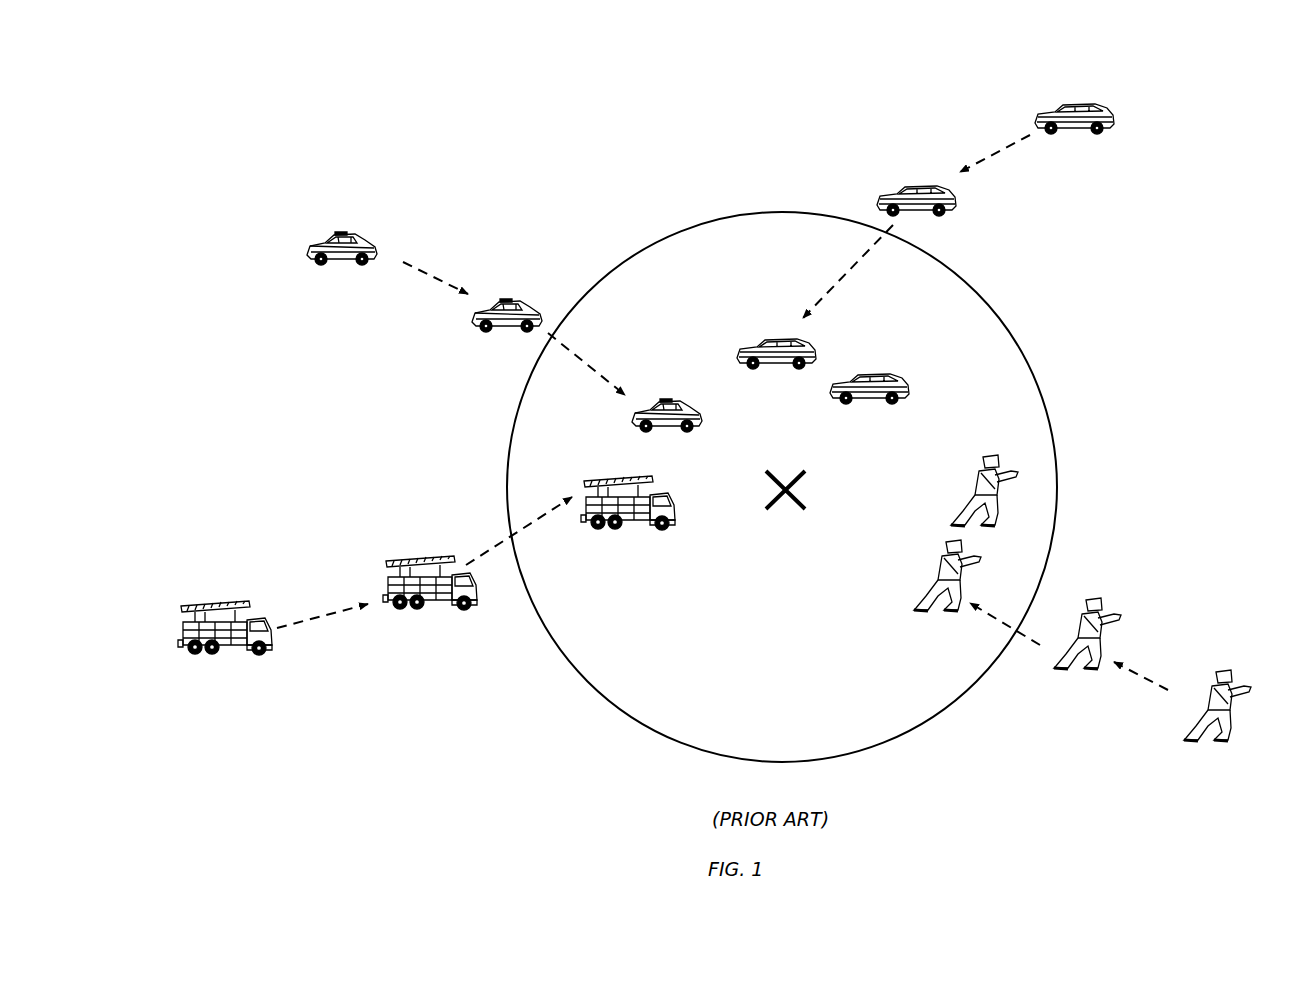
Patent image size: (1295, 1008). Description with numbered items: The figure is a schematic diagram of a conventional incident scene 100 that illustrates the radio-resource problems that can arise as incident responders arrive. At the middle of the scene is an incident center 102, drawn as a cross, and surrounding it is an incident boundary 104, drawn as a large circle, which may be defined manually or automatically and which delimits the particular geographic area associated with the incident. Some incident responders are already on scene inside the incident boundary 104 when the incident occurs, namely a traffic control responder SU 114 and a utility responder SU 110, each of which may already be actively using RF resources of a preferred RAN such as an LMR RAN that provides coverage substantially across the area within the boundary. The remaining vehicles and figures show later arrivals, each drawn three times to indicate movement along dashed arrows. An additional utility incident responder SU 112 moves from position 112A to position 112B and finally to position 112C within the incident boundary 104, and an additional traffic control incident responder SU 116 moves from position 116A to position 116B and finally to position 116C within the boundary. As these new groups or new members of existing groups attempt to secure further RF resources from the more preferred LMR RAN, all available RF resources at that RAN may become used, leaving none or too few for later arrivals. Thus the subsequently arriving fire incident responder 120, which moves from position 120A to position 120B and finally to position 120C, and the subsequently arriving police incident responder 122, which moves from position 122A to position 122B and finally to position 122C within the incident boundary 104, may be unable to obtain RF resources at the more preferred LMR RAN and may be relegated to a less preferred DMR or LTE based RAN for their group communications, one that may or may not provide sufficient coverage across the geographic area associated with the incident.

The conventional incident scene 100 is at (1272, 264).
The incident center 102 is at (799, 494).
The incident boundary 104 is at (1030, 362).
The utility responder SU 110 is at (894, 426).
The additional utility incident responder SU 112 is at (1100, 156).
The position 112A is at (1078, 97).
The position 112B is at (924, 178).
The position 112C is at (779, 328).
The traffic control responder SU 114 is at (1018, 552).
The additional traffic control incident responder SU 116 is at (950, 642).
The position 116A is at (1205, 663).
The position 116B is at (1080, 594).
The position 116C is at (903, 586).
The fire incident responder 120 is at (234, 698).
The position 120A is at (209, 705).
The position 120B is at (427, 650).
The position 120C is at (629, 570).
The police incident responder 122 is at (350, 293).
The position 122A is at (334, 220).
The position 122B is at (499, 287).
The position 122C is at (662, 386).